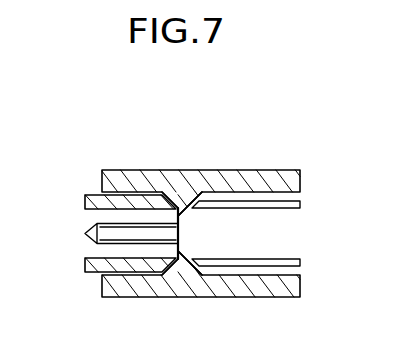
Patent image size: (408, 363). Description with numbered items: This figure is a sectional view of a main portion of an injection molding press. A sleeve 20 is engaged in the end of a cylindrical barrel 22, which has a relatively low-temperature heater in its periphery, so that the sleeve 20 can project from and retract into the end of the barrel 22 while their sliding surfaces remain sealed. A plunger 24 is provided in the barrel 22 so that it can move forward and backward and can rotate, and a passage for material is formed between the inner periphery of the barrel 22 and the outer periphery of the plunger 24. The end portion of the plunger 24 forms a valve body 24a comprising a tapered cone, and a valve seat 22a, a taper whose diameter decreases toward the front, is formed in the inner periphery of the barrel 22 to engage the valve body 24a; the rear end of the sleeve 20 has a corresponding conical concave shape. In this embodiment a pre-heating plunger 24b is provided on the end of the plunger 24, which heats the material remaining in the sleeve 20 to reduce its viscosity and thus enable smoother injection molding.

The sleeve 20 is at (86, 258).
The barrel 22 is at (278, 173).
The valve seat 22a is at (203, 190).
The plunger 24 is at (277, 243).
The valve body 24a is at (181, 216).
The pre-heating plunger 24b is at (86, 230).